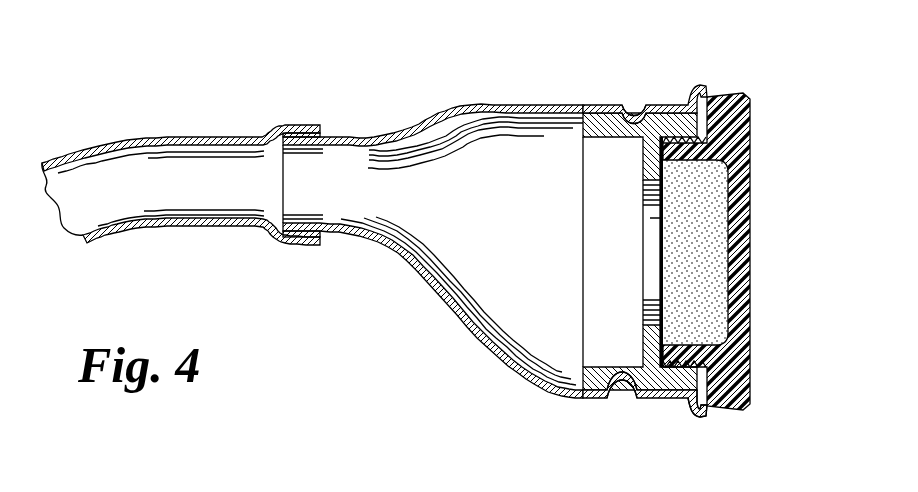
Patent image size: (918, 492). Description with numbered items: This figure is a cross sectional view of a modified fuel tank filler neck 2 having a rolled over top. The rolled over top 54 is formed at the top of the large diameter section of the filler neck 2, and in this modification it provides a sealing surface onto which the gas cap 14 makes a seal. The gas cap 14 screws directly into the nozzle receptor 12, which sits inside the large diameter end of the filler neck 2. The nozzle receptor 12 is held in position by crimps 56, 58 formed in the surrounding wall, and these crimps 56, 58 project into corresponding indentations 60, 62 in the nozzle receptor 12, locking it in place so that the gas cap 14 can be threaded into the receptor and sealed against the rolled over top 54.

The filler neck 2 is at (448, 355).
The nozzle receptor 12 is at (600, 105).
The gas cap 14 is at (745, 229).
The rolled over top 54 is at (698, 422).
The crimp 56 is at (636, 399).
The crimp 58 is at (644, 108).
The indentation 60 is at (625, 110).
The indentation 62 is at (597, 399).